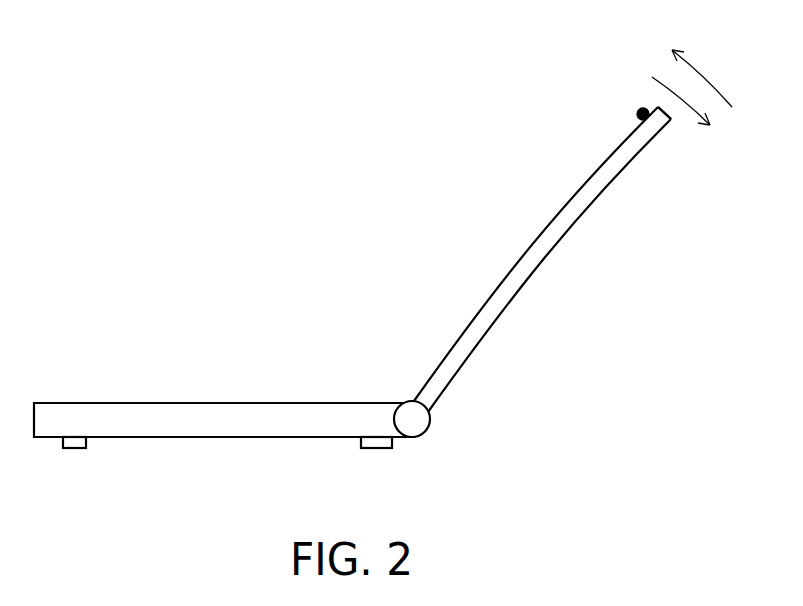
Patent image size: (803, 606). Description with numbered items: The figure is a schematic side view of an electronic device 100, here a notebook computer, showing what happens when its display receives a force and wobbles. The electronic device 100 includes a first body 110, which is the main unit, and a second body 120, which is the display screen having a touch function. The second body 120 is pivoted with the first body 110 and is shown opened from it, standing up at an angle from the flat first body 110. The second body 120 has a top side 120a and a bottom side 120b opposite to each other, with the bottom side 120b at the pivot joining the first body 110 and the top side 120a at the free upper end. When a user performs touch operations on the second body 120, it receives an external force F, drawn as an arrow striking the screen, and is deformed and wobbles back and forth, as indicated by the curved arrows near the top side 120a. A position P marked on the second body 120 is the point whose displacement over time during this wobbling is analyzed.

The electronic device 100 is at (752, 30).
The first body 110 is at (217, 422).
The second body 120 is at (543, 260).
The top side 120a is at (678, 133).
The bottom side 120b is at (448, 405).
The position P is at (640, 108).
The external force F is at (600, 142).